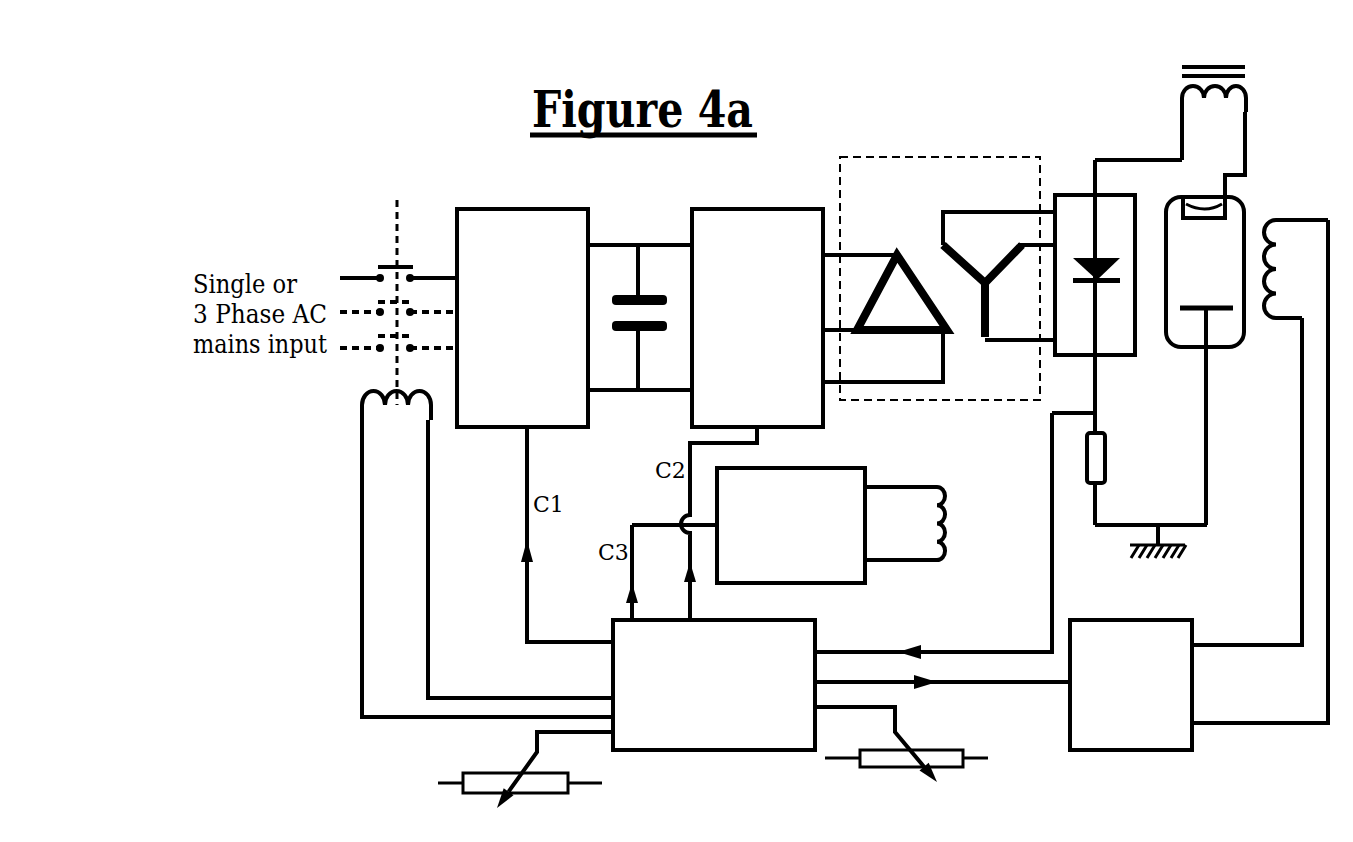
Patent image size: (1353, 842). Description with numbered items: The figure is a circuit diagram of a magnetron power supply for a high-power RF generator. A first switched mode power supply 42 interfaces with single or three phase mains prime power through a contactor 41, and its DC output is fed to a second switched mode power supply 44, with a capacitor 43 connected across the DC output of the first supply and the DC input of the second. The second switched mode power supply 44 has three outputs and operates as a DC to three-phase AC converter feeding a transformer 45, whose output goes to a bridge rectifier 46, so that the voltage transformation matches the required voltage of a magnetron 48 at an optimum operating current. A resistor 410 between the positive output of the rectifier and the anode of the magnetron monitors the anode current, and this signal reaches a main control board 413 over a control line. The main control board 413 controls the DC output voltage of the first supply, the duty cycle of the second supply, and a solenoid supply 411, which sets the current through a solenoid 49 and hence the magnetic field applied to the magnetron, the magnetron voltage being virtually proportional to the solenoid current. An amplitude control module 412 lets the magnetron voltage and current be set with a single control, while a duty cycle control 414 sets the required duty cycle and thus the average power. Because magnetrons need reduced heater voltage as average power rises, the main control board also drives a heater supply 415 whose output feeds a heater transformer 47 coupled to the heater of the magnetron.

The contactor 41 is at (407, 260).
The first switched mode power supply 42 is at (523, 356).
The C1 capacitor 43 is at (618, 292).
The second switched mode power supply 44 is at (722, 356).
The T1 transformer 45 is at (902, 198).
The BR1 rectifier 46 is at (1087, 318).
The heater T2 transformer 47 is at (1248, 102).
The magnetron 48 is at (1213, 259).
The solenoid 49 is at (1280, 243).
The R1 resistor 410 is at (1107, 479).
The solenoid supply 411 is at (1149, 659).
The amplitude control module 412 is at (902, 768).
The main control board 413 is at (792, 662).
The duty cycle control 414 is at (477, 768).
The heater supply 415 is at (797, 501).